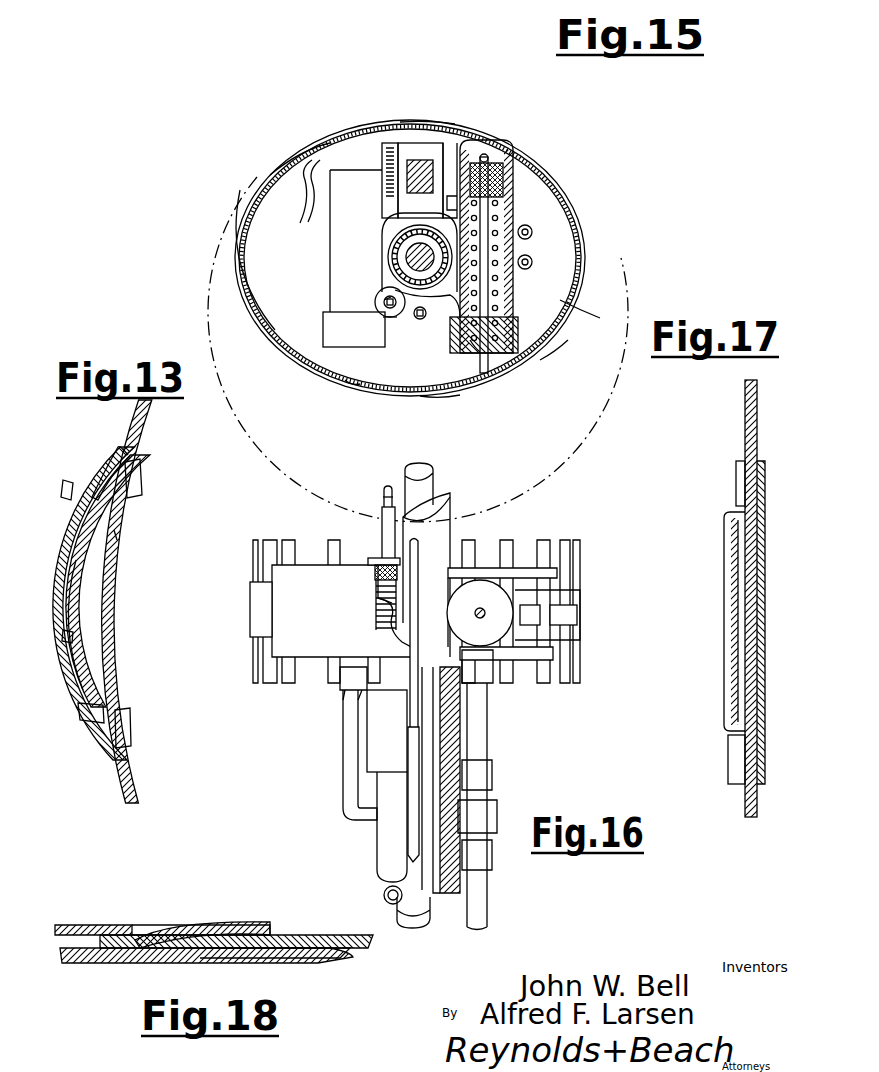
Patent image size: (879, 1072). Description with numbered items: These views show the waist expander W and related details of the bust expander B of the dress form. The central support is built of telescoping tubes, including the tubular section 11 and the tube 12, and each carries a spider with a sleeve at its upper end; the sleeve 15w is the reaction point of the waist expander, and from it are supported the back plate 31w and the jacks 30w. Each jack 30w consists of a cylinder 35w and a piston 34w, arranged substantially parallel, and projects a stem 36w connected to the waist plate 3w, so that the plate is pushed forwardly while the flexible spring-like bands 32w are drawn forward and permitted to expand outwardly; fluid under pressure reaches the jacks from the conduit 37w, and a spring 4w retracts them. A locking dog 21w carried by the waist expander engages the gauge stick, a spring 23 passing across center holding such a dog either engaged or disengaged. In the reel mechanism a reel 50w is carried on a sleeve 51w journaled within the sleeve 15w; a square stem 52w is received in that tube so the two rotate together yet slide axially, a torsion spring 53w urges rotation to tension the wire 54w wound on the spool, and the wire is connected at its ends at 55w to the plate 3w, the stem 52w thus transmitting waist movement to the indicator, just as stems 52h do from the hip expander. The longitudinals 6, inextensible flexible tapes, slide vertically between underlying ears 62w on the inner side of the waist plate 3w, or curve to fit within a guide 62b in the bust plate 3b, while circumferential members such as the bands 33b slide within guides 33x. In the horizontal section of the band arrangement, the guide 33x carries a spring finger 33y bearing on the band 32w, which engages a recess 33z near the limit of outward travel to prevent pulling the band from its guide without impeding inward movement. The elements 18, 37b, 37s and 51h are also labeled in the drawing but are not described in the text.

In FIG. 15, the waist plate 3w is at (292, 354).
In FIG. 17, the waist plate 3w is at (760, 593).
In FIG. 16, the waist plate 3w is at (331, 611).
In FIG. 13, the bust plate 3b is at (97, 730).
In FIG. 15, the spring 4w is at (525, 345).
In FIG. 15, the longitudinal tape 6 is at (285, 326).
In FIG. 13, the longitudinal tape 6 is at (107, 600).
In FIG. 17, the longitudinal tape 6 is at (745, 400).
In FIG. 18, the longitudinal tape 6 is at (130, 952).
In FIG. 16, the longitudinal tape 6 is at (285, 540).
In FIG. 15, the tubular section 11 is at (395, 241).
In FIG. 16, the tubular section 11 is at (437, 532).
In FIG. 16, the tube 12 is at (385, 841).
In FIG. 15, the sleeve 15w is at (478, 354).
In FIG. 16, the sleeve 15w is at (385, 729).
In FIG. 15, the shaft 18 is at (412, 257).
In FIG. 16, the shaft 18 is at (426, 475).
In FIG. 15, the locking dog 21w is at (417, 152).
In FIG. 15, the spring 23 is at (382, 180).
In FIG. 16, the jack 30w is at (500, 606).
In FIG. 15, the back plate 31w is at (470, 108).
In FIG. 18, the back plate 31w is at (218, 962).
In FIG. 15, the band 32w is at (592, 292).
In FIG. 17, the band 32w is at (731, 618).
In FIG. 18, the band 32w is at (310, 952).
In FIG. 16, the band 32w is at (545, 622).
In FIG. 13, the guide 33x is at (83, 652).
In FIG. 17, the guide 33x is at (724, 668).
In FIG. 18, the guide 33x is at (112, 926).
In FIG. 16, the guide 33x is at (530, 578).
In FIG. 15, the spring finger 33y is at (577, 360).
In FIG. 18, the spring finger 33y is at (160, 926).
In FIG. 16, the spring finger 33y is at (560, 632).
In FIG. 15, the recess 33z is at (450, 406).
In FIG. 18, the recess 33z is at (185, 940).
In FIG. 13, the band 33b is at (73, 533).
In FIG. 15, the piston 34w is at (505, 178).
In FIG. 15, the cylinder 35w is at (508, 305).
In FIG. 15, the stem 36w is at (485, 373).
In FIG. 16, the stem 36w is at (484, 612).
In FIG. 15, the terminal 37b is at (531, 234).
In FIG. 15, the terminal 37s is at (531, 264).
In FIG. 16, the conduit 37w is at (345, 789).
In FIG. 15, the reel 50w is at (385, 320).
In FIG. 16, the reel 50w is at (383, 535).
In FIG. 15, the sleeve 51w is at (375, 305).
In FIG. 16, the sleeve 51w is at (386, 497).
In FIG. 16, the rod 51h is at (410, 823).
In FIG. 15, the stem 52w is at (385, 301).
In FIG. 16, the stem 52w is at (388, 478).
In FIG. 15, the stem 52h is at (418, 316).
In FIG. 16, the stem 52h is at (400, 691).
In FIG. 16, the torsion spring 53w is at (392, 626).
In FIG. 15, the wire 54w is at (386, 305).
In FIG. 16, the wire 54w is at (372, 571).
In FIG. 15, the connection 55w is at (350, 386).
In FIG. 15, the ear 62w is at (258, 252).
In FIG. 17, the ear 62w is at (738, 488).
In FIG. 16, the ear 62w is at (570, 608).
In FIG. 13, the guide 62b is at (133, 490).
In FIG. 13, the bust expander B is at (120, 535).
In FIG. 15, the waist expander W is at (298, 160).
In FIG. 16, the waist expander W is at (580, 613).